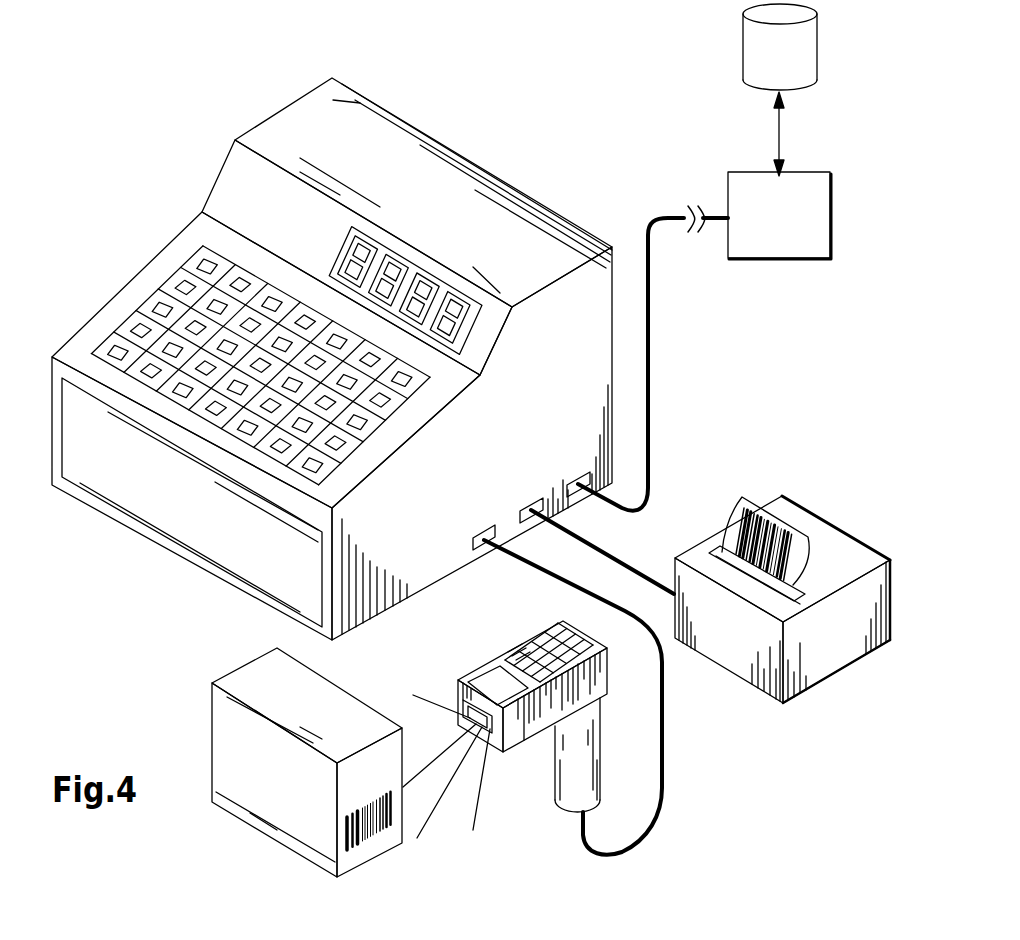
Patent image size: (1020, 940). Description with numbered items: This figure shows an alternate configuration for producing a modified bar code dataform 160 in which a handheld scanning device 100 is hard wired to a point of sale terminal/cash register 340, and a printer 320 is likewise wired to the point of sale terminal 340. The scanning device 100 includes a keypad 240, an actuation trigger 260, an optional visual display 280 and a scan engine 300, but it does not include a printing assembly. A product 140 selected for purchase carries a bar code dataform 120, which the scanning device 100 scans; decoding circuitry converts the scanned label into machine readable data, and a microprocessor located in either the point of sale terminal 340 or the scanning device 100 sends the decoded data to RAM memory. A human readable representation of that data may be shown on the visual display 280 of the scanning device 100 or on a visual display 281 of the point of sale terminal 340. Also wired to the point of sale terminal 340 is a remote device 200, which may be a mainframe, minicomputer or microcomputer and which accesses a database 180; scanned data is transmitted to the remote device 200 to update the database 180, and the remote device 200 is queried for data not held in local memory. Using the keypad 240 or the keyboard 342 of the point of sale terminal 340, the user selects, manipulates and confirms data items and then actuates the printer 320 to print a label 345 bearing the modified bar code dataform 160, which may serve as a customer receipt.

The scanning device 100 is at (553, 727).
The bar code dataform 120 is at (404, 835).
The product 140 is at (342, 775).
The modified bar code dataform 160 is at (738, 494).
The database 180 is at (813, 42).
The remote device 200 is at (808, 242).
The keypad 240 is at (548, 643).
The actuation trigger 260 is at (550, 736).
The visual display 280 is at (486, 678).
The visual display 281 is at (342, 252).
The scan engine 300 is at (468, 690).
The printer 320 is at (785, 573).
The point of sale terminal/cash register 340 is at (331, 359).
The keyboard 342 is at (137, 317).
The label 345 is at (812, 510).